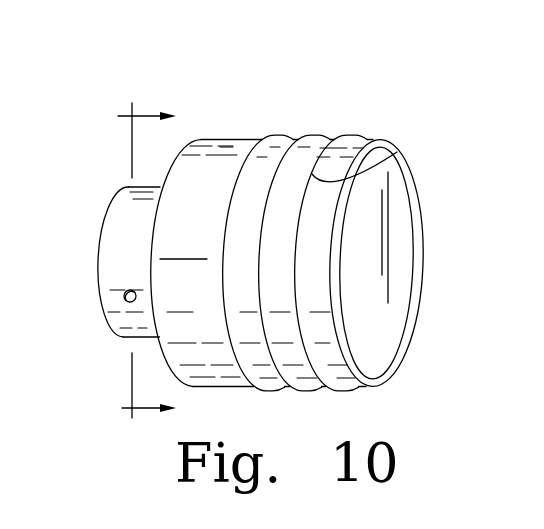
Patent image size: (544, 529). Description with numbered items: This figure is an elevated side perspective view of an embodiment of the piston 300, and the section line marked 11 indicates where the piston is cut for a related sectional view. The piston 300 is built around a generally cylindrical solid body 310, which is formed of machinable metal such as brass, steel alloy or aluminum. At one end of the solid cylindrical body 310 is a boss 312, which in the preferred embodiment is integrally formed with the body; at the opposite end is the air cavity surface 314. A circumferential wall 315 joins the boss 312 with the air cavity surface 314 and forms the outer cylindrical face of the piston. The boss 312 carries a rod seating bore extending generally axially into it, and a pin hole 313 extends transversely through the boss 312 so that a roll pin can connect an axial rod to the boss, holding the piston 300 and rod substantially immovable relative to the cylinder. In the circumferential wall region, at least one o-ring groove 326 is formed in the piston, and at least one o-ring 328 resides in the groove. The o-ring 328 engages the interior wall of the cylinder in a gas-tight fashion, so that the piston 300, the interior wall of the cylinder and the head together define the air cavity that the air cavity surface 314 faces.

The piston 300 is at (407, 116).
The solid cylindrical body 310 is at (222, 141).
The boss 312 is at (122, 231).
The pin hole 313 is at (127, 290).
The air cavity surface 314 is at (407, 248).
The circumferential wall 315 is at (183, 245).
The o-ring groove 326 is at (398, 153).
The o-ring 328 is at (338, 135).
The section line 11- 11 is at (161, 261).